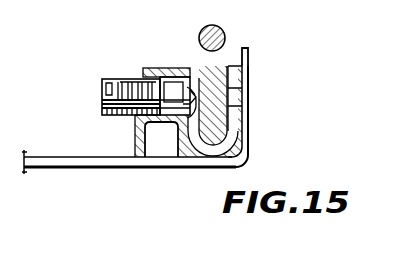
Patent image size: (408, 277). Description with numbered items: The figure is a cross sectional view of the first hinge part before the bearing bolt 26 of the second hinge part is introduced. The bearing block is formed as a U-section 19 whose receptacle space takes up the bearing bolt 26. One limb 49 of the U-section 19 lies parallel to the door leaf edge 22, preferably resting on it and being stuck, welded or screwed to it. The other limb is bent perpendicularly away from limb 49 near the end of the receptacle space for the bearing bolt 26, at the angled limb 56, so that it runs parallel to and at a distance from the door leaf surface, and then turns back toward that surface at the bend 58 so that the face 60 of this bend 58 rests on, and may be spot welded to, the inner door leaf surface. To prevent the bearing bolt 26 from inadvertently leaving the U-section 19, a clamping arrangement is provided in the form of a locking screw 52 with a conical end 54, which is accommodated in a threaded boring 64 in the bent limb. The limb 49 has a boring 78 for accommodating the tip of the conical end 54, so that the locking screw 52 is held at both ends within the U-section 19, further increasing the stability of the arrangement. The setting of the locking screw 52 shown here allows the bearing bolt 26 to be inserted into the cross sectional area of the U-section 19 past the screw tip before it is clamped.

The U-section 19 is at (248, 141).
The door leaf edge 22 is at (248, 75).
The bearing bolt 26 is at (225, 30).
The limb 49 is at (239, 47).
The locking screw 52 is at (112, 78).
The conical end 54 is at (186, 140).
The angled limb 56 is at (166, 126).
The bend 58 is at (138, 134).
The face 60 is at (138, 168).
The threaded boring 64 is at (163, 72).
The boring 78 is at (235, 97).